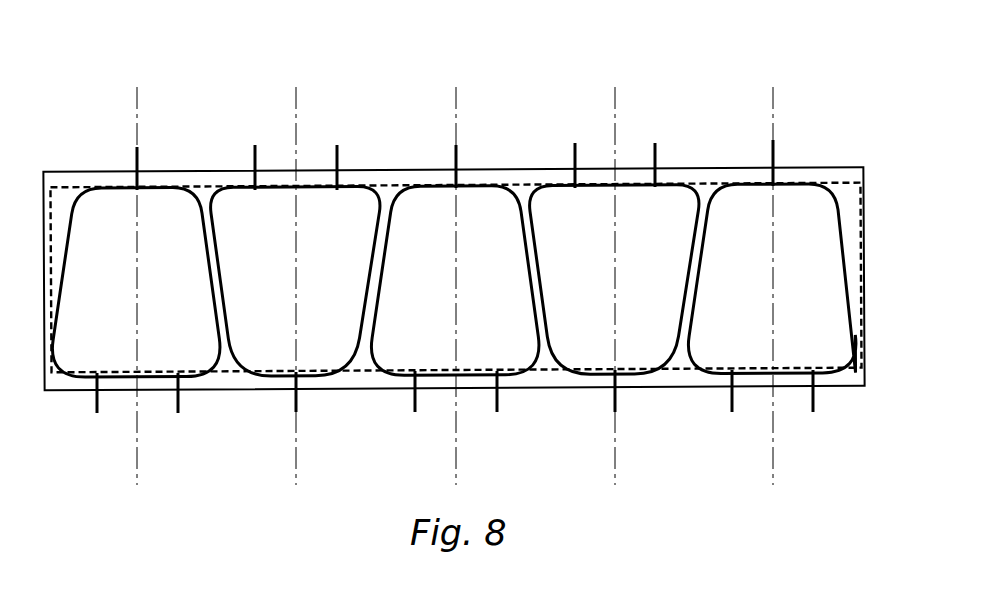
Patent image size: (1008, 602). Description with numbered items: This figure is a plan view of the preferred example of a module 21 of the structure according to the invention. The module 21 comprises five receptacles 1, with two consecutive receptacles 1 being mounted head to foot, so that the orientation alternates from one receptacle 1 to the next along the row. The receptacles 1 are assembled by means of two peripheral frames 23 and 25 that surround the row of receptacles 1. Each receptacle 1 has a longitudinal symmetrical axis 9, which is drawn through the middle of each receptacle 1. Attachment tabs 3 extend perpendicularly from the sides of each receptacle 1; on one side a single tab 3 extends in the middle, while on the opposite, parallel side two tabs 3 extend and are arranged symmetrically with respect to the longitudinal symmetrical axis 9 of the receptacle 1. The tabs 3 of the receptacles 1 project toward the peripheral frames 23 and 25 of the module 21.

The receptacle 1 is at (178, 315).
The attachment tab 3 is at (137, 149).
The longitudinal symmetrical axis 9 is at (299, 473).
The module 21 is at (374, 92).
The peripheral frame 23 is at (862, 232).
The peripheral frame 25 is at (866, 176).